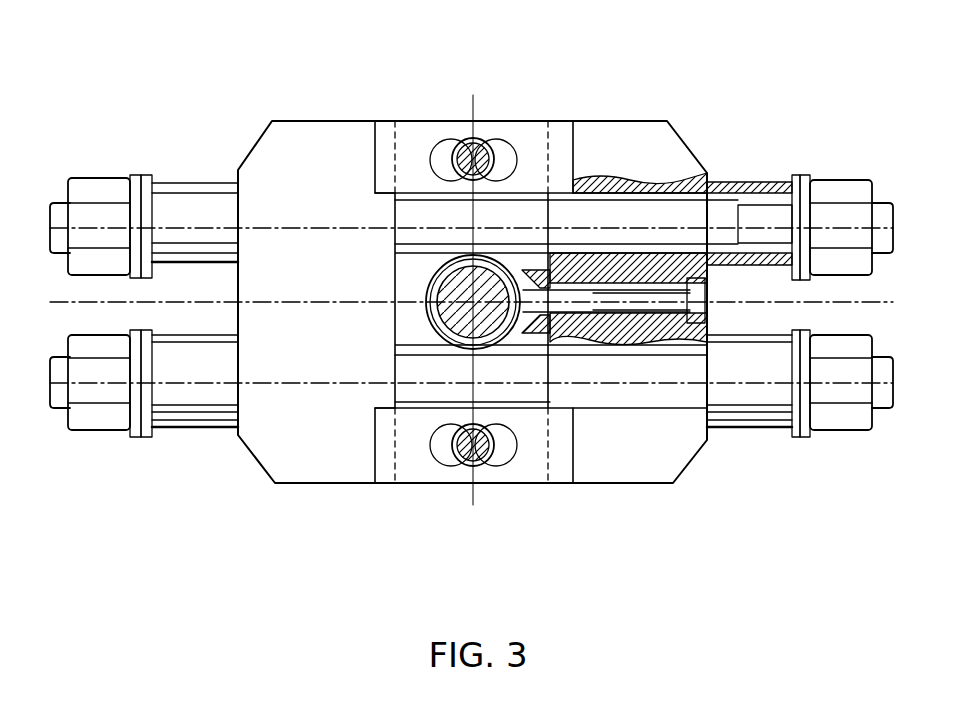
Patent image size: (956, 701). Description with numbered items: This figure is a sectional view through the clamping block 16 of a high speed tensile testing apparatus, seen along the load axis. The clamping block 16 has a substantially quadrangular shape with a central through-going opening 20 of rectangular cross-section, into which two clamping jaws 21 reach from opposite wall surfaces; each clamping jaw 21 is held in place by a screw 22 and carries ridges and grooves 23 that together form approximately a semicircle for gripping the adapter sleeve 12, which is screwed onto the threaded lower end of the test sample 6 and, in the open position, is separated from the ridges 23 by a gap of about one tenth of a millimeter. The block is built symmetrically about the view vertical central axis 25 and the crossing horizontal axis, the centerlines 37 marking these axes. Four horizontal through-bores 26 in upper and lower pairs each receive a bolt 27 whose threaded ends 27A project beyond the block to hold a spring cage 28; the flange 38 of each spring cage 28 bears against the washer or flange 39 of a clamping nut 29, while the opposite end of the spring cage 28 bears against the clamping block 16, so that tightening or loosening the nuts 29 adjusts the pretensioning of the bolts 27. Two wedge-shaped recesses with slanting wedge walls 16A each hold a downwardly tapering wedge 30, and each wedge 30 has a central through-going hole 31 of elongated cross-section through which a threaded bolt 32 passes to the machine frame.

The test sample 6 is at (540, 348).
The adapter sleeve 12 is at (422, 330).
The clamping block 16 is at (290, 200).
The slanting wedge walls 16A is at (383, 133).
The central through-going opening 20 is at (479, 250).
The clamping jaws 21 is at (410, 273).
The screw 22 is at (668, 303).
The ridges and grooves 23 is at (430, 267).
The view vertical central axis 25 is at (430, 218).
The horizontal through-bores 26 is at (592, 200).
The bolt 27 is at (683, 200).
The threaded ends 27A is at (60, 200).
The spring cage 28 is at (200, 210).
The clamping nut 29 is at (88, 210).
The wedge 30 is at (415, 132).
The through-going hole 31 is at (503, 152).
The threaded bolt 32 is at (478, 148).
The center axis 37 is at (270, 232).
The flange 38 is at (797, 175).
The washer or flange 39 is at (137, 178).